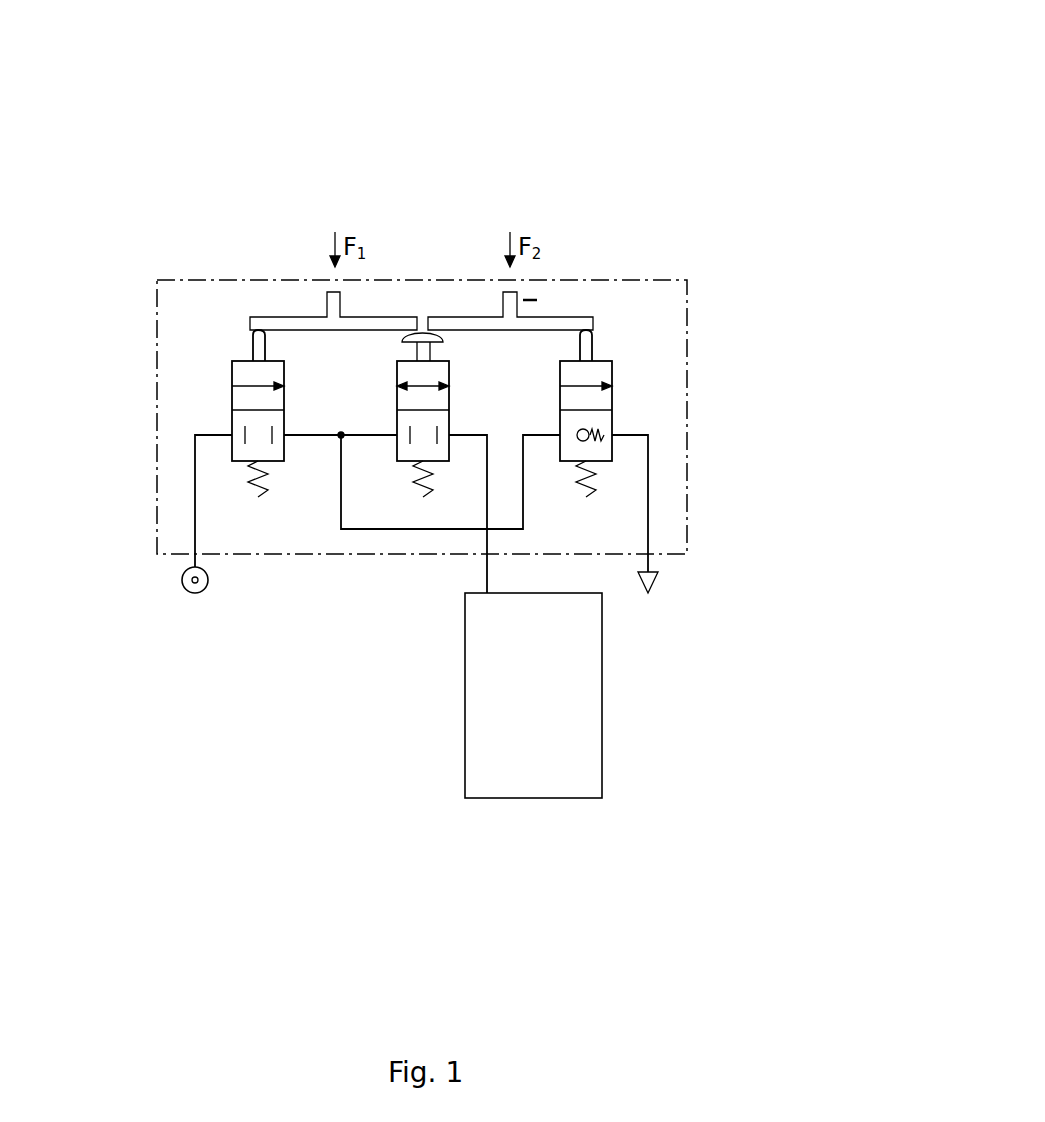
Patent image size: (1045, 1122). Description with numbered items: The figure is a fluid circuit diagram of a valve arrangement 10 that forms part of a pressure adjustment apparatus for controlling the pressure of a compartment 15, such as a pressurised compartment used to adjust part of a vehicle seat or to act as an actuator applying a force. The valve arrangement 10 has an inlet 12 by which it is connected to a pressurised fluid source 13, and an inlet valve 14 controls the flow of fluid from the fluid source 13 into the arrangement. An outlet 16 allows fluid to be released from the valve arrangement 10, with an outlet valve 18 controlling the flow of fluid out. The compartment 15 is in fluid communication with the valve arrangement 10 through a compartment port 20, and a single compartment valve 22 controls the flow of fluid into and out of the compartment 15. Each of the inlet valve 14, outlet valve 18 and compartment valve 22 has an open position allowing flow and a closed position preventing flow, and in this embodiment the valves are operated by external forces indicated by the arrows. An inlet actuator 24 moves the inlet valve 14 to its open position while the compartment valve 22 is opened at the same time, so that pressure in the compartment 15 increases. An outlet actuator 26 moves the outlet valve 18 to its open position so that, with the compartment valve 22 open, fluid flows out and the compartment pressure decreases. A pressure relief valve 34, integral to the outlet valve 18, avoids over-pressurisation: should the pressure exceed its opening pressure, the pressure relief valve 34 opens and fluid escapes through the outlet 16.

The valve arrangement 10 is at (561, 111).
The inlet 12 is at (195, 532).
The pressurised fluid source 13 is at (201, 587).
The inlet valve 14 is at (232, 372).
The compartment 15 is at (546, 691).
The outlet 16 is at (648, 535).
The outlet valve 18 is at (607, 398).
The compartment port 20 is at (487, 545).
The compartment valve 22 is at (397, 392).
The inlet actuator 24 is at (282, 318).
The outlet actuator 26 is at (565, 322).
The pressure relief valve 34 is at (600, 430).